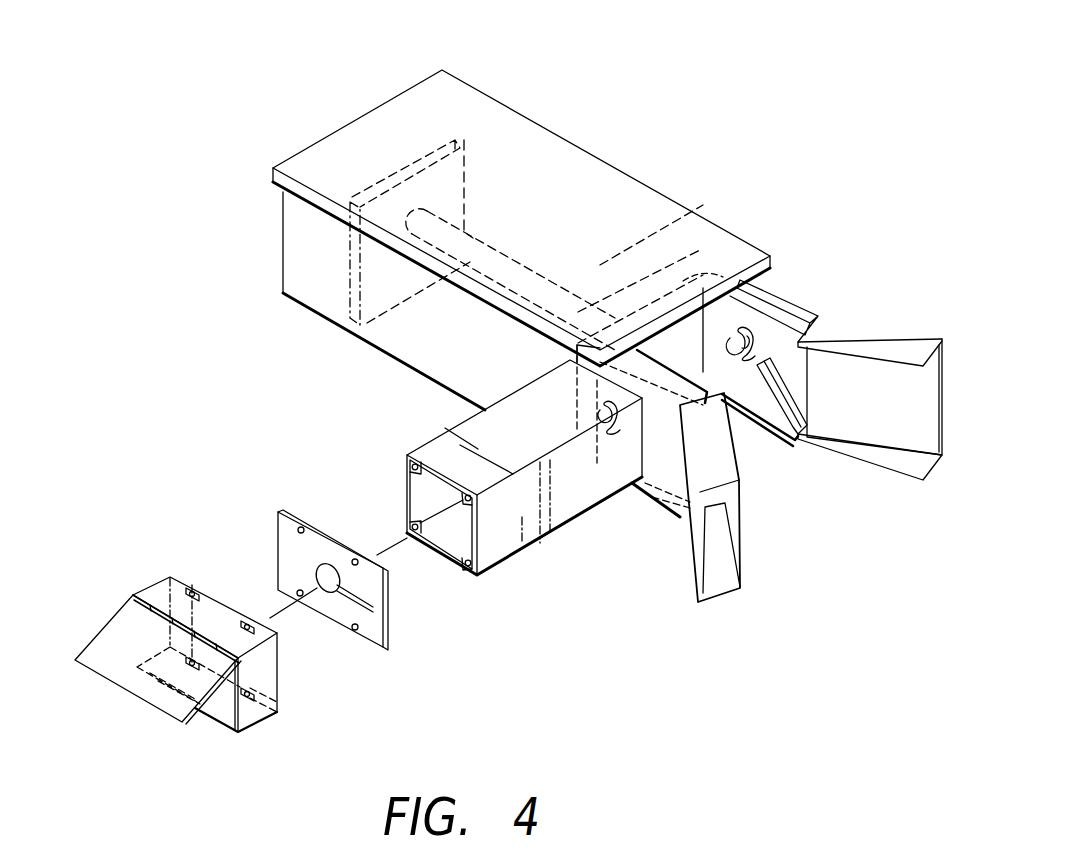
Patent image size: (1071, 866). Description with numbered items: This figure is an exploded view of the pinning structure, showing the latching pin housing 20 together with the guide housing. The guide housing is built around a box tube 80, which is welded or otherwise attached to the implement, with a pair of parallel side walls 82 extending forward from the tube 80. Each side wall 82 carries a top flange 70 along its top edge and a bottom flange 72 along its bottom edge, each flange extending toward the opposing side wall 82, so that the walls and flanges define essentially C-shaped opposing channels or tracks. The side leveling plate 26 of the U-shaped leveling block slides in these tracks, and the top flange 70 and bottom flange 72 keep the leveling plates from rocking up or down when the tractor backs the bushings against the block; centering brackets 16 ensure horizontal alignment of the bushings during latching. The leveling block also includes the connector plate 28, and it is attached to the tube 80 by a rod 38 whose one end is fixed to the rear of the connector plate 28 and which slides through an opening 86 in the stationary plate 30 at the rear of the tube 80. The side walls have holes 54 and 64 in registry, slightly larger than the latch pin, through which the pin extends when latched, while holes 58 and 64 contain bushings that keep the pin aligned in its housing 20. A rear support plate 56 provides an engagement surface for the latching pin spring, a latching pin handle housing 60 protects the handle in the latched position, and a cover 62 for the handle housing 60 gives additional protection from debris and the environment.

The centering bracket 16 is at (901, 411).
The latching pin housing 20 is at (493, 537).
The side leveling plate 26 is at (727, 313).
The connector plate 28 is at (677, 340).
The stationary plate 30 is at (466, 140).
The rod 38 is at (490, 243).
The hole 54 is at (753, 345).
The rear support plate 56 is at (367, 593).
The hole 58 is at (317, 577).
The latching pin handle housing 60 is at (243, 680).
The cover 62 is at (147, 690).
The hole 64 is at (593, 413).
The top flange 70 is at (803, 312).
The bottom flange 72 is at (767, 440).
The box tube 80 is at (583, 147).
The side wall 82 is at (433, 350).
The opening 86 is at (407, 202).